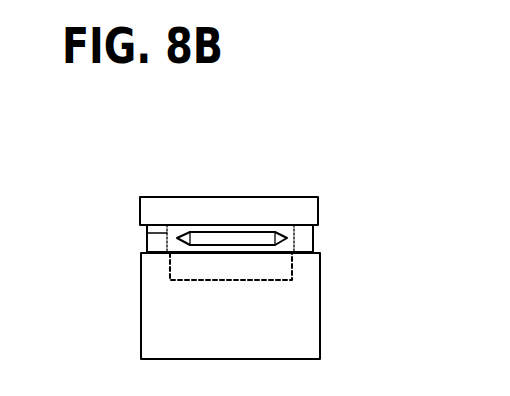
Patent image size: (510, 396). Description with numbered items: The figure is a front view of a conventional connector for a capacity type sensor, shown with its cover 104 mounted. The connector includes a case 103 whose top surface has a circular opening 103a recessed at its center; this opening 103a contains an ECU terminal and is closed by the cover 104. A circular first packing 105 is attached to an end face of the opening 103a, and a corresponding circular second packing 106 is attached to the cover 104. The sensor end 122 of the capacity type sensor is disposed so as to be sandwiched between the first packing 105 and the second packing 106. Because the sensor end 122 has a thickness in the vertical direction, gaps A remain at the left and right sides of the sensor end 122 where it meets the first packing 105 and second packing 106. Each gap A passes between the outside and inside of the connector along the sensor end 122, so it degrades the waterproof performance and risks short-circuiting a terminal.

The case 103 is at (320, 335).
The opening 103a is at (303, 267).
The cover 104 is at (318, 203).
The first packing 105 is at (147, 245).
The second packing 106 is at (147, 233).
The sensor end 122 is at (237, 238).
The gap A is at (185, 232).